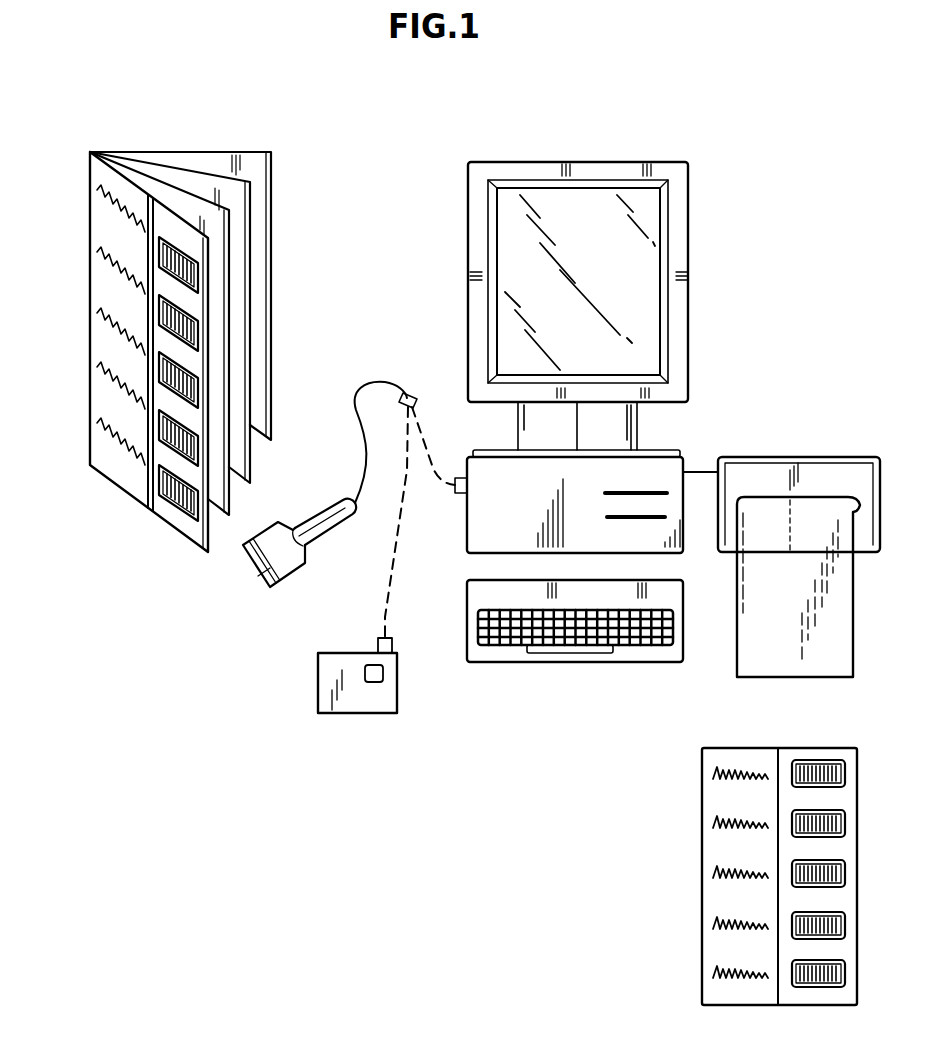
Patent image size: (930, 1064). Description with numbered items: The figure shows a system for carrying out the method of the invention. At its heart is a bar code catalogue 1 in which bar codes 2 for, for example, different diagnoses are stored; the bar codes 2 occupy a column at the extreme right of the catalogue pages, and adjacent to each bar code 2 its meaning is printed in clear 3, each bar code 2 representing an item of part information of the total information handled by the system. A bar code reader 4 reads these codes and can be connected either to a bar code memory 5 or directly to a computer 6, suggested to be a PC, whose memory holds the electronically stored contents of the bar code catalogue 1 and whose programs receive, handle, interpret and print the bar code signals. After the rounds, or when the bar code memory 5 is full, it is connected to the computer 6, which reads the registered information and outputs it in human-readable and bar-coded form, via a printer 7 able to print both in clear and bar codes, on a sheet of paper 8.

The bar code catalogue 1 is at (172, 152).
The bar codes 2 is at (198, 392).
The clear 3 is at (112, 212).
The bar code reader 4 is at (258, 570).
The bar code memory 5 is at (318, 677).
The computer 6 is at (575, 162).
The printer 7 is at (790, 462).
The sheet of paper 8 is at (713, 846).